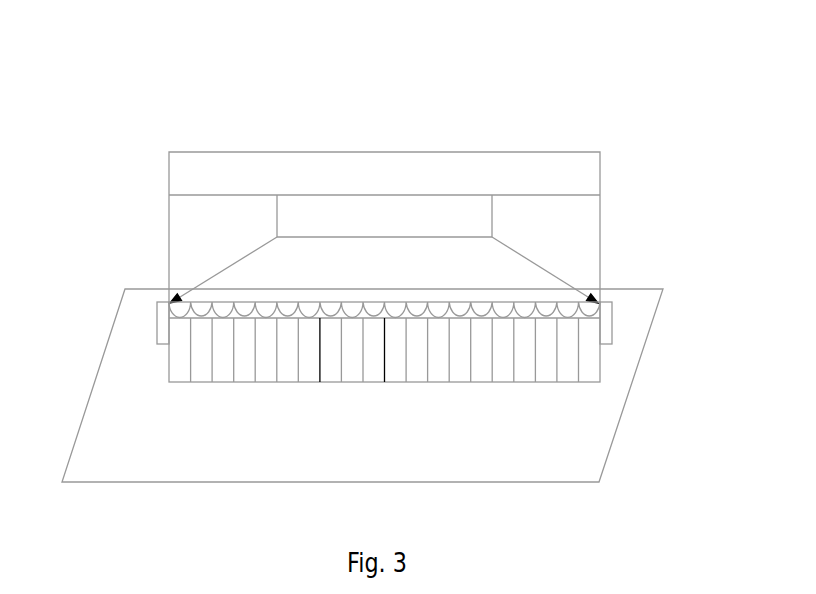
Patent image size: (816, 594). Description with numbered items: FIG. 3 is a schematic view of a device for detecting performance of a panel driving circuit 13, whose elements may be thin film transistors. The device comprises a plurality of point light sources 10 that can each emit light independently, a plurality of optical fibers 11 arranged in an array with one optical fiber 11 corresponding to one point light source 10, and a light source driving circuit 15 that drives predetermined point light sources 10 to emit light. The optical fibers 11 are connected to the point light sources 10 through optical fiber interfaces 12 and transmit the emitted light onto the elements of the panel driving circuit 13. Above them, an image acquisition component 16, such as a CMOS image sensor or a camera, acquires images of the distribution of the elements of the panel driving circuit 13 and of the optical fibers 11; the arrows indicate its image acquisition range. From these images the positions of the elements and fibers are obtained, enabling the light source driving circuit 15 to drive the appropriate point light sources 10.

The point light source 10 is at (182, 311).
The optical fiber 11 is at (182, 370).
The optical fiber interface 12 is at (606, 332).
The panel driving circuit 13 is at (548, 450).
The light source driving circuit 15 is at (470, 173).
The image acquisition component 16 is at (328, 217).